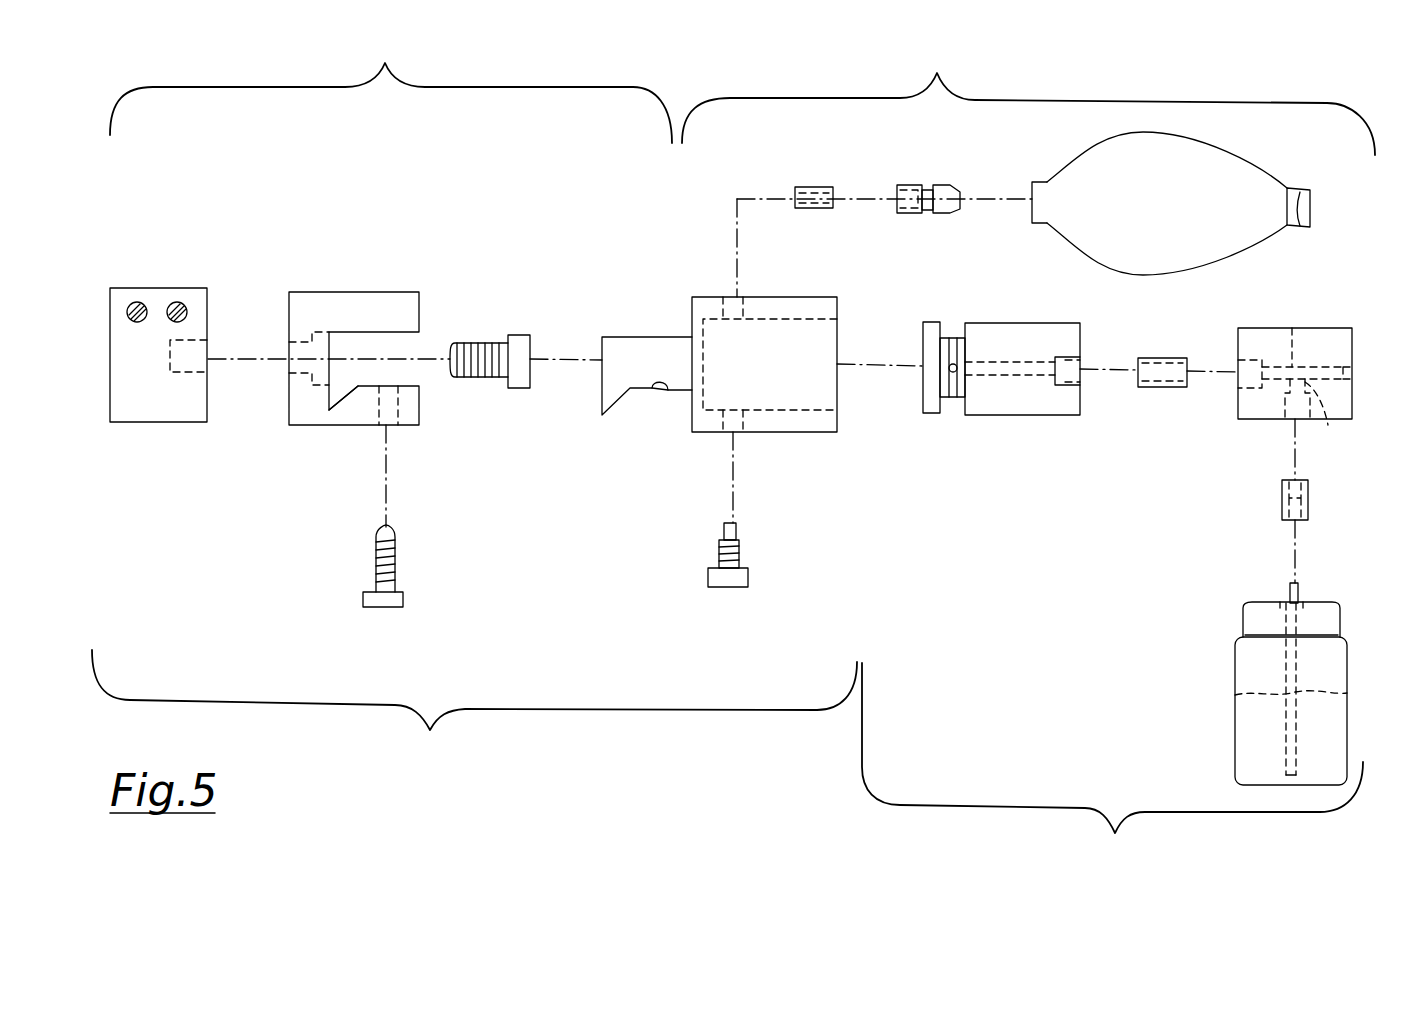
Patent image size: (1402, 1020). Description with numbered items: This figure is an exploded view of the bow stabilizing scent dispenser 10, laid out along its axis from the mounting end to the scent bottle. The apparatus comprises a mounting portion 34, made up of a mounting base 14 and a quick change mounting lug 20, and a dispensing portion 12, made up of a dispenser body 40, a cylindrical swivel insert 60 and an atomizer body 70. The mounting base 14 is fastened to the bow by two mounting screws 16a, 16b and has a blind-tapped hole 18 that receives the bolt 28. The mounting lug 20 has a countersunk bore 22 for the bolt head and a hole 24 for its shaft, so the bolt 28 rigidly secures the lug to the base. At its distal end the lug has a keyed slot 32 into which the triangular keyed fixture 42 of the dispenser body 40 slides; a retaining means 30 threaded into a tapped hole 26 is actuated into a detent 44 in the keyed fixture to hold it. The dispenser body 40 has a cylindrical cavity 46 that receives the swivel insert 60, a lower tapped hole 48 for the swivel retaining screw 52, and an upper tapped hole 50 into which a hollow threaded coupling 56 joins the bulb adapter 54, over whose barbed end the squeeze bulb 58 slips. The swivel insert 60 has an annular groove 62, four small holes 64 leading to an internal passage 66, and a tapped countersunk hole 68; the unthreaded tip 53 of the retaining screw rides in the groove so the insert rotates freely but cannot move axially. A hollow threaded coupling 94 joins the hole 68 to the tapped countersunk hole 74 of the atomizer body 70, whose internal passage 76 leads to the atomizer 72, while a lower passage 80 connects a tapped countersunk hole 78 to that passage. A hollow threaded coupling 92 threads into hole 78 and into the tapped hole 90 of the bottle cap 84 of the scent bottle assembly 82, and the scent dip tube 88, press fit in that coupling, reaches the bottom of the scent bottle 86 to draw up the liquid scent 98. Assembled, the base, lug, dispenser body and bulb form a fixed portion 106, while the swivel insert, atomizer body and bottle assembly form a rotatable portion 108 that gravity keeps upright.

The bow stabilizing scent dispenser 10 is at (618, 767).
The dispensing portion 12 is at (1028, 101).
The mounting base 14 is at (145, 420).
The mounting screw 16a is at (137, 302).
The mounting screw 16b is at (177, 302).
The blind-tapped hole 18 is at (189, 372).
The quick change mounting lug 20 is at (360, 291).
The countersunk bore 22 is at (322, 330).
The hole 24 is at (290, 380).
The tapped hole 26 is at (408, 414).
The bolt 28 is at (475, 345).
The retaining means 30 is at (377, 552).
The keyed slot 32 is at (338, 398).
The mounting portion 34 is at (391, 90).
The dispenser body 40 is at (720, 365).
The keyed fixture 42 is at (612, 410).
The detent 44 is at (660, 393).
The cylindrical cavity 46 is at (838, 320).
The tapped hole 48 is at (748, 428).
The tapped hole 50 is at (722, 300).
The swivel retaining screw 52 is at (719, 564).
The unthreaded tip 53 is at (737, 530).
The bulb adapter 54 is at (930, 185).
The hollow threaded coupling 56 is at (815, 187).
The squeeze bulb 58 is at (1078, 165).
The swivel insert 60 is at (979, 367).
The annular groove 62 is at (957, 340).
The small diameter holes 64 is at (949, 370).
The internal passage 66 is at (1018, 378).
The tapped countersunk hole 68 is at (1068, 386).
The atomizer body 70 is at (1294, 375).
The atomizer 72 is at (1350, 370).
The tapped countersunk hole 74 is at (1238, 367).
The internal passage 76 is at (1292, 328).
The tapped countersunk hole 78 is at (1285, 405).
The internal passage 80 is at (1328, 425).
The scent bottle assembly 82 is at (1209, 684).
The bottle cap 84 is at (1250, 617).
The scent bottle 86 is at (1235, 755).
The scent dip tube 88 is at (1285, 652).
The tapped hole 90 is at (1300, 598).
The hollow threaded coupling 92 is at (1283, 505).
The hollow threaded coupling 94 is at (1158, 358).
The liquid scent 98 is at (1247, 735).
The fixed portion 106 is at (474, 705).
The rotatable portion 108 is at (1112, 763).